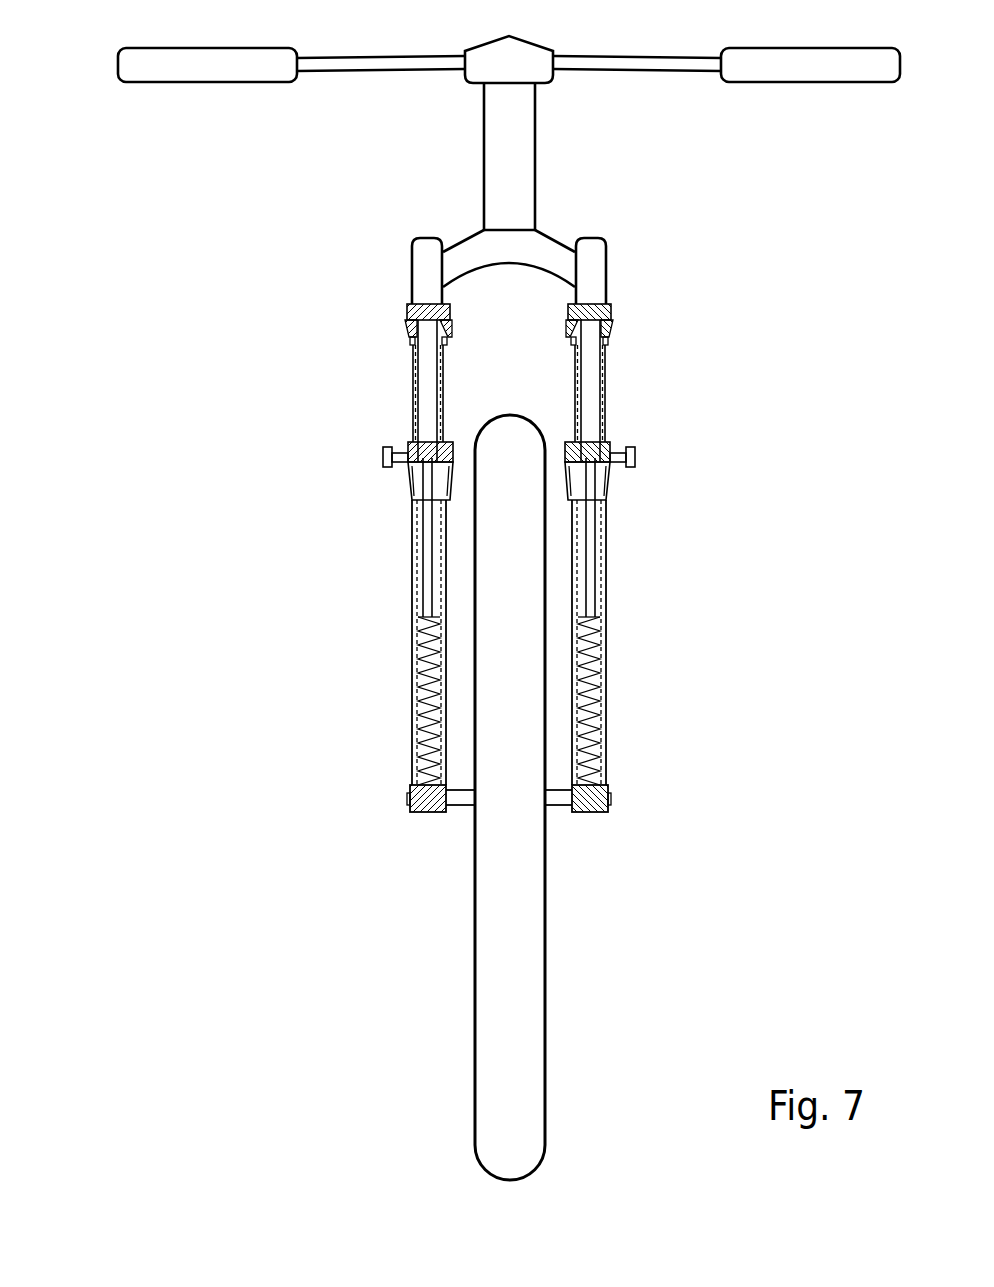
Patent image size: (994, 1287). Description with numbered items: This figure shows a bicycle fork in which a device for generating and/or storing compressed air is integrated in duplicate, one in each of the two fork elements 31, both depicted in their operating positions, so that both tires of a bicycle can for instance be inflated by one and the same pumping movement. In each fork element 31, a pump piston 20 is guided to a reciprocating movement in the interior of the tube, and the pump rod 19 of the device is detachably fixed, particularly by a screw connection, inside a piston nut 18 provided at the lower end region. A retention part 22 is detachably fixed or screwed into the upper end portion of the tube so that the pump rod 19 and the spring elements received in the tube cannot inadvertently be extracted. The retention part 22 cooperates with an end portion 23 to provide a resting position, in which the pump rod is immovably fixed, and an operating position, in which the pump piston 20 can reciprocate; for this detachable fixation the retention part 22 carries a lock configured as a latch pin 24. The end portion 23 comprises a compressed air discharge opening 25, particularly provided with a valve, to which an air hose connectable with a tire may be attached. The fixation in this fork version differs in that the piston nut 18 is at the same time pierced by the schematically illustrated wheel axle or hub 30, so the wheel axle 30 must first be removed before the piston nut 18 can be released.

The piston nut 18 is at (410, 796).
The pump rod 19 is at (427, 592).
The pump piston 20 is at (413, 393).
The retention part 22 is at (407, 480).
The end portion 23 is at (407, 304).
The latch pin 24 is at (382, 451).
The compressed air discharge opening 25 is at (408, 322).
The wheel axle 30 is at (460, 798).
The fork element 31 is at (415, 672).